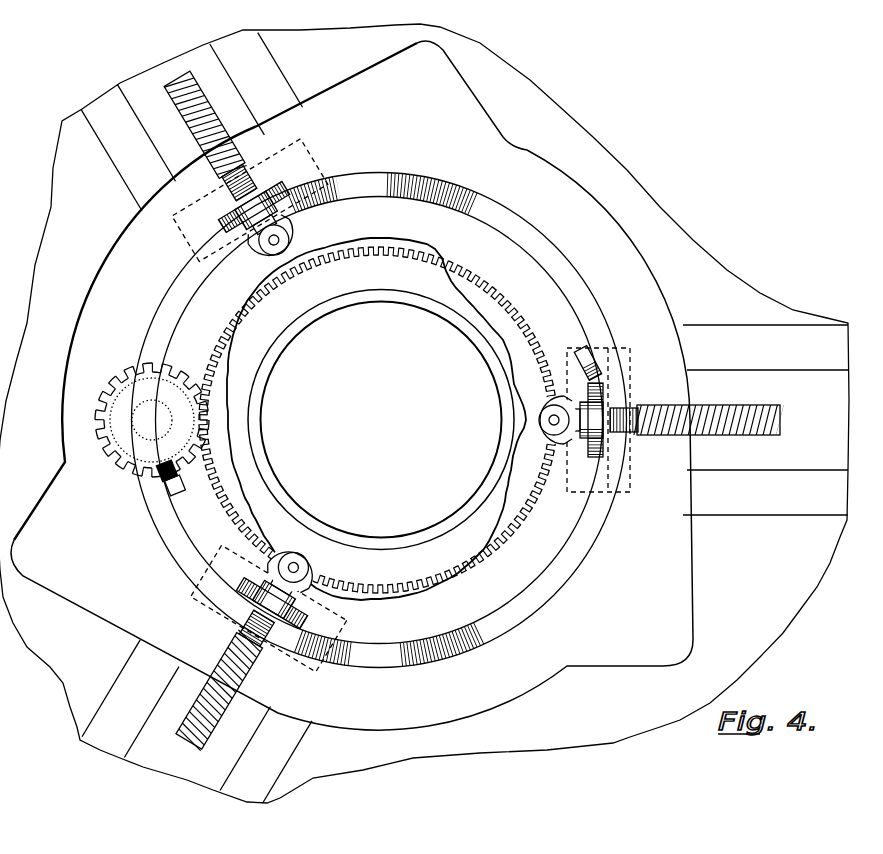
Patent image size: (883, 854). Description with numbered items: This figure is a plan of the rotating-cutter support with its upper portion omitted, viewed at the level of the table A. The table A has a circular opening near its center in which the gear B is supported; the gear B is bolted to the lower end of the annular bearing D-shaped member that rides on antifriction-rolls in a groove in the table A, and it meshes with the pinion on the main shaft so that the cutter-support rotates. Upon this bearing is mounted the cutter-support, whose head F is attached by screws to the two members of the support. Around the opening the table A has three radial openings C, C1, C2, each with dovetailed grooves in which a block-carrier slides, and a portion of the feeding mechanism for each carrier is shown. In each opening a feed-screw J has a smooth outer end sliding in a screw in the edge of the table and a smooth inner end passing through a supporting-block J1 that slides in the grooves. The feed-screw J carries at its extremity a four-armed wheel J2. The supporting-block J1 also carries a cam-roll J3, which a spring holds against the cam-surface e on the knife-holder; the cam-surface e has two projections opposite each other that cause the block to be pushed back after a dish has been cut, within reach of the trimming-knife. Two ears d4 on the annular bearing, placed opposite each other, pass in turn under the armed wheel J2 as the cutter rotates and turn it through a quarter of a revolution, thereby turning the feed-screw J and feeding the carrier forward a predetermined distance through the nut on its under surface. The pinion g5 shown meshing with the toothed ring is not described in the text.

The table A is at (424, 421).
The gear B is at (232, 497).
The radial opening C is at (724, 431).
The radial opening C1 is at (189, 124).
The radial opening C2 is at (219, 694).
The head F is at (376, 419).
The cam-surface e is at (502, 334).
The pinion g5 is at (167, 368).
The ear d4 is at (582, 356).
The feed-screw J is at (214, 130).
The supporting-block J1 is at (538, 422).
The four-armed wheel J2 is at (593, 457).
The cam-roll J3 is at (292, 239).